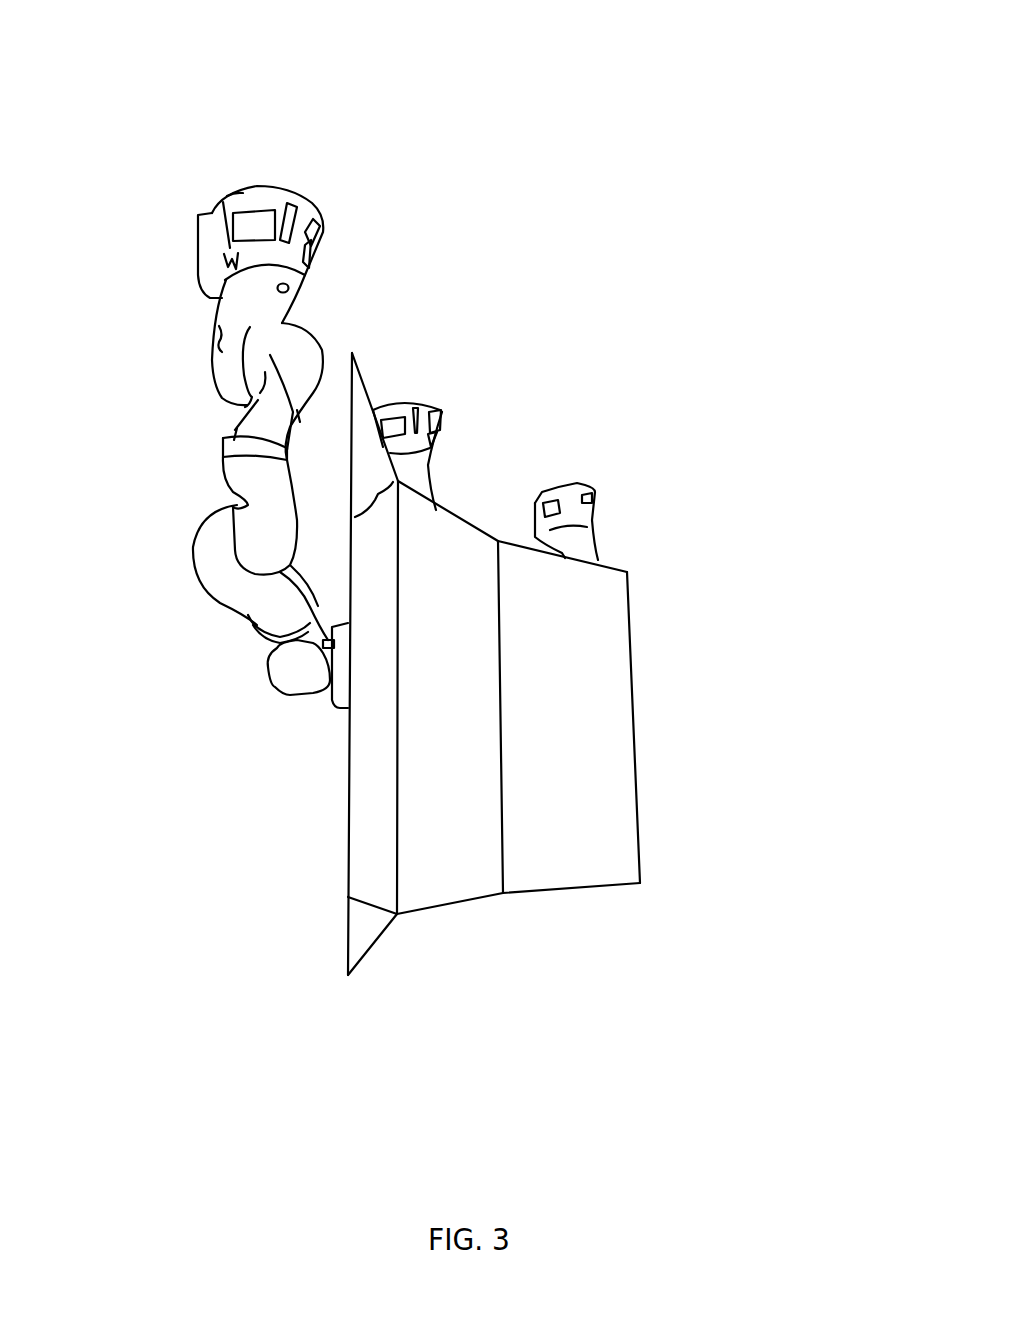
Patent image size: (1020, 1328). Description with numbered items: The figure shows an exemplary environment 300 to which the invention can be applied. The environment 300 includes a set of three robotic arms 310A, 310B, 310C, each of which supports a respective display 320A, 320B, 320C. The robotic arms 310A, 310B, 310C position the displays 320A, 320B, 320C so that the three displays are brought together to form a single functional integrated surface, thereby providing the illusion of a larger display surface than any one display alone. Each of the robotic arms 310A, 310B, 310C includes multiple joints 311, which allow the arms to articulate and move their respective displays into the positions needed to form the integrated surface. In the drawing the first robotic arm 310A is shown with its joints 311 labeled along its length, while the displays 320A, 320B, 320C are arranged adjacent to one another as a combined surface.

The environment 300 is at (625, 85).
The robotic arm 310A is at (327, 193).
The robotic arm 310B is at (410, 391).
The robotic arm 310C is at (579, 483).
The joints 311 is at (320, 285).
The display 320A is at (368, 929).
The display 320B is at (447, 875).
The display 320C is at (580, 848).